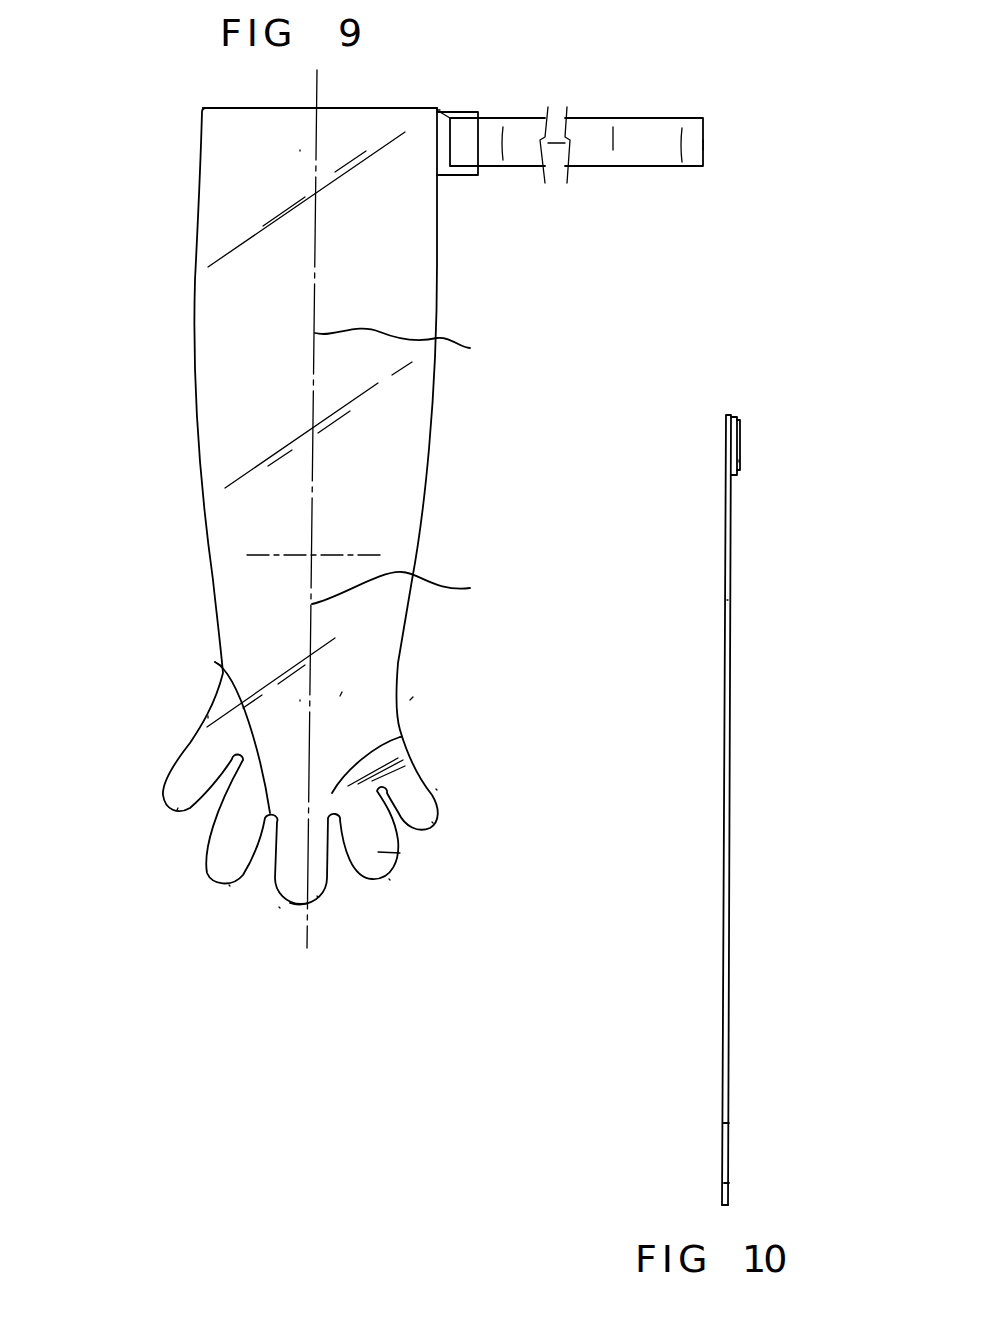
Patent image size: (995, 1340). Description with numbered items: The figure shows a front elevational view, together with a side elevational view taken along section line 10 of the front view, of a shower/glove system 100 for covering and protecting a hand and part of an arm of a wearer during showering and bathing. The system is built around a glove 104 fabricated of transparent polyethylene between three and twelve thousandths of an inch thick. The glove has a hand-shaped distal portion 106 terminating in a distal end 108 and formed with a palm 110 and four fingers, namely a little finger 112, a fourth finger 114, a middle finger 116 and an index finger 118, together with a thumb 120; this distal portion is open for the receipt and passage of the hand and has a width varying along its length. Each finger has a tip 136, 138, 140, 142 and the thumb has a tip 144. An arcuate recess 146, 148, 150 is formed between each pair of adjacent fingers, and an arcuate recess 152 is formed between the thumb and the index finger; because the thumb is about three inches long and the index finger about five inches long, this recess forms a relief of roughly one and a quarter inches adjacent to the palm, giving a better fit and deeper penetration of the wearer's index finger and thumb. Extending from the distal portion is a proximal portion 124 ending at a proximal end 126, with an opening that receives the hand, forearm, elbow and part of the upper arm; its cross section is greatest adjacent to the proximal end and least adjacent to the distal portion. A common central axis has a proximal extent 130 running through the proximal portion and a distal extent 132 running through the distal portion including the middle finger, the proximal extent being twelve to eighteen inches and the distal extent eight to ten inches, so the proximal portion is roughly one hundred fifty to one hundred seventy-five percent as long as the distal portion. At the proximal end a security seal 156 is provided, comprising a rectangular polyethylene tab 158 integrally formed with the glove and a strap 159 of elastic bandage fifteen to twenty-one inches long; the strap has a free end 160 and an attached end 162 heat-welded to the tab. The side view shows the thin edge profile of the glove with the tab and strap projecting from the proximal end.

In FIG. 9, the section line 10 is at (153, 936).
In FIG. 9, the shower/glove system 100 is at (752, 138).
In FIG. 10, the shower/glove system 100 is at (780, 653).
In FIG. 9, the glove 104 is at (196, 360).
In FIG. 10, the glove 104 is at (730, 820).
In FIG. 9, the distal portion 106 is at (338, 727).
In FIG. 9, the distal end 108 is at (297, 910).
In FIG. 10, the distal end 108 is at (727, 1205).
In FIG. 9, the palm 110 is at (340, 696).
In FIG. 9, the little finger 112 is at (437, 790).
In FIG. 9, the fourth finger 114 is at (400, 853).
In FIG. 9, the middle finger 116 is at (318, 897).
In FIG. 9, the index finger 118 is at (226, 864).
In FIG. 9, the thumb 120 is at (190, 775).
In FIG. 9, the proximal portion 124 is at (394, 302).
In FIG. 9, the proximal end 126 is at (366, 108).
In FIG. 9, the proximal extent of central axis 130 is at (421, 348).
In FIG. 9, the distal extent of central axis 132 is at (421, 592).
In FIG. 9, the finger tip 136 is at (433, 823).
In FIG. 9, the finger tip 138 is at (390, 880).
In FIG. 9, the finger tip 140 is at (280, 908).
In FIG. 9, the finger tip 142 is at (229, 887).
In FIG. 9, the thumb tip 144 is at (178, 810).
In FIG. 9, the arcuate recess 146 is at (400, 737).
In FIG. 9, the arcuate recess 148 is at (410, 701).
In FIG. 9, the arcuate recess 150 is at (227, 667).
In FIG. 9, the arcuate recess 152 is at (208, 718).
In FIG. 9, the security seal 156 is at (500, 118).
In FIG. 10, the security seal 156 is at (733, 417).
In FIG. 9, the polyethylene tab 158 is at (462, 177).
In FIG. 10, the polyethylene tab 158 is at (738, 413).
In FIG. 9, the strap 159 is at (632, 166).
In FIG. 10, the strap 159 is at (740, 464).
In FIG. 9, the free end 160 is at (703, 147).
In FIG. 9, the attached end 162 is at (447, 131).